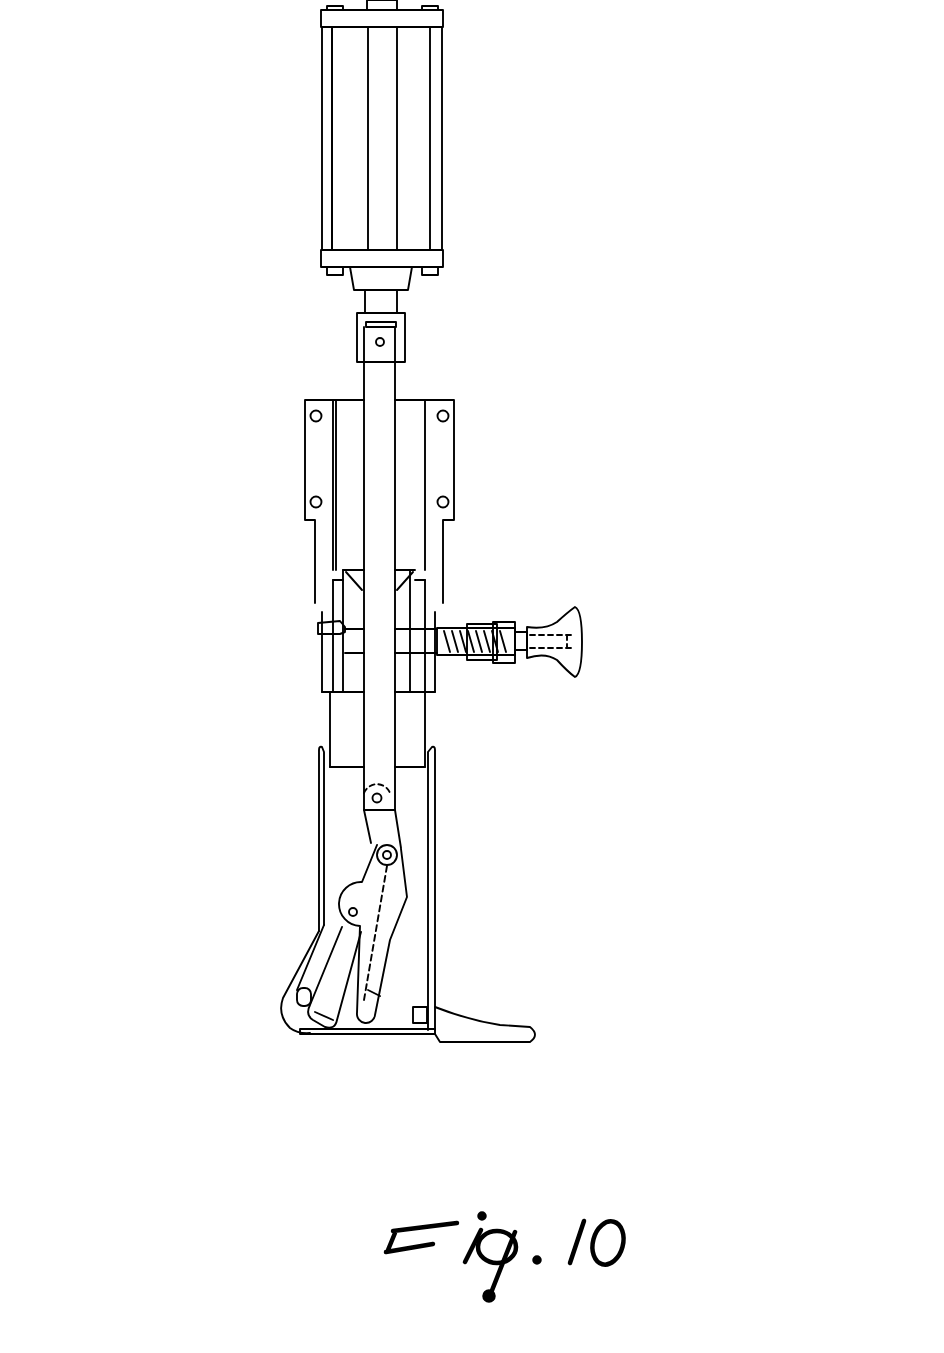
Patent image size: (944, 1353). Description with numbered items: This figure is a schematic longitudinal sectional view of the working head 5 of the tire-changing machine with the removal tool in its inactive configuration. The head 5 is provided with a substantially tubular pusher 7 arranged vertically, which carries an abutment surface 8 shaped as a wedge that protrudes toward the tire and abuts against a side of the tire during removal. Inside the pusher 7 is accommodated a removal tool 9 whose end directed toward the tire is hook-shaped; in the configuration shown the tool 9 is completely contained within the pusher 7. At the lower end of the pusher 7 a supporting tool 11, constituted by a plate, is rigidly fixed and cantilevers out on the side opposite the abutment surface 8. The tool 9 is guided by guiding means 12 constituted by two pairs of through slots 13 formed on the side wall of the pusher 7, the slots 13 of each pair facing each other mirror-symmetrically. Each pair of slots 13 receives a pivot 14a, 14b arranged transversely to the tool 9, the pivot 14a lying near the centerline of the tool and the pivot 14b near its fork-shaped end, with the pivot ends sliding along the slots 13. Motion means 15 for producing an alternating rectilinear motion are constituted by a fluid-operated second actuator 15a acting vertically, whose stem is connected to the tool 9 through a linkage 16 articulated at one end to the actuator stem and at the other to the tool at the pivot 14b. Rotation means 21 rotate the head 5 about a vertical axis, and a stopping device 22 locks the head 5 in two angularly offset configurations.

The head 5 is at (218, 831).
The pusher 7 is at (310, 784).
The abutment surface 8 is at (317, 937).
The tool 9 is at (330, 1035).
The supporting tool 11 is at (507, 1040).
The guiding means 12 is at (430, 900).
The through slots 13 is at (308, 987).
The pivot 14a is at (347, 902).
The pivot 14b is at (405, 855).
The motion means 15 is at (450, 176).
The second actuator 15a is at (415, 75).
The linkage 16 is at (389, 827).
The rotation means 21 is at (472, 436).
The stopping device 22 is at (522, 596).